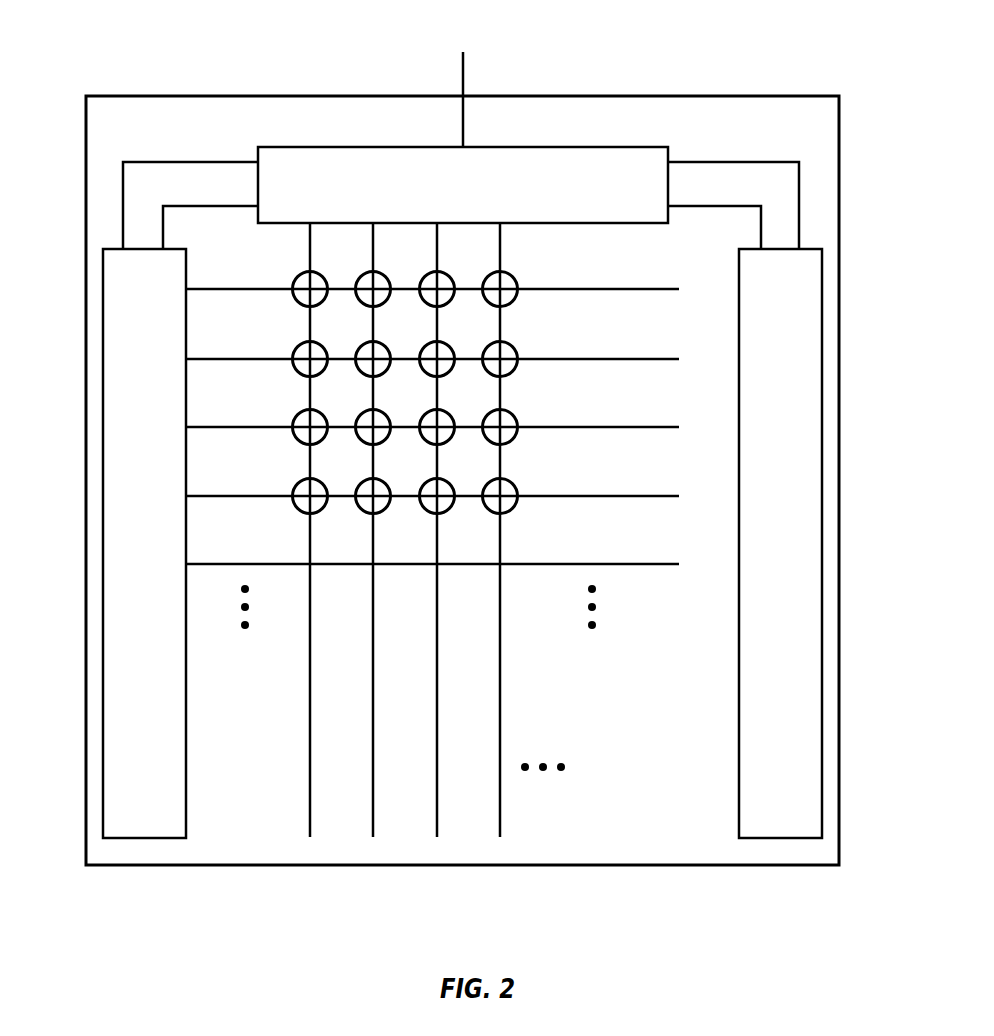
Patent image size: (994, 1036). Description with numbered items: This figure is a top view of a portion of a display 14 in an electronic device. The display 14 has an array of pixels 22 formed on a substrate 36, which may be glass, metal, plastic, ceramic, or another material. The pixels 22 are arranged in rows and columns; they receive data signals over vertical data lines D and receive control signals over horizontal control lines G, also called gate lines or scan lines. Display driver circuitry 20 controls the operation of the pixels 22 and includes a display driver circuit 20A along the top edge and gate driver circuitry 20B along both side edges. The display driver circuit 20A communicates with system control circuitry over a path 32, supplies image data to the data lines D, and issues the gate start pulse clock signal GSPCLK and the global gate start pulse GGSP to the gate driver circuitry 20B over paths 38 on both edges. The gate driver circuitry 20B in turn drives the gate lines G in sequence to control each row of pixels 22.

The display 14 is at (730, 70).
The display driver circuitry 20 is at (556, 126).
The display driver circuit 20A is at (636, 153).
The gate driver circuitry 20B is at (117, 676).
The pixels 22 is at (512, 300).
The path 32 is at (463, 63).
The substrate 36 is at (790, 94).
The paths 38 is at (205, 224).